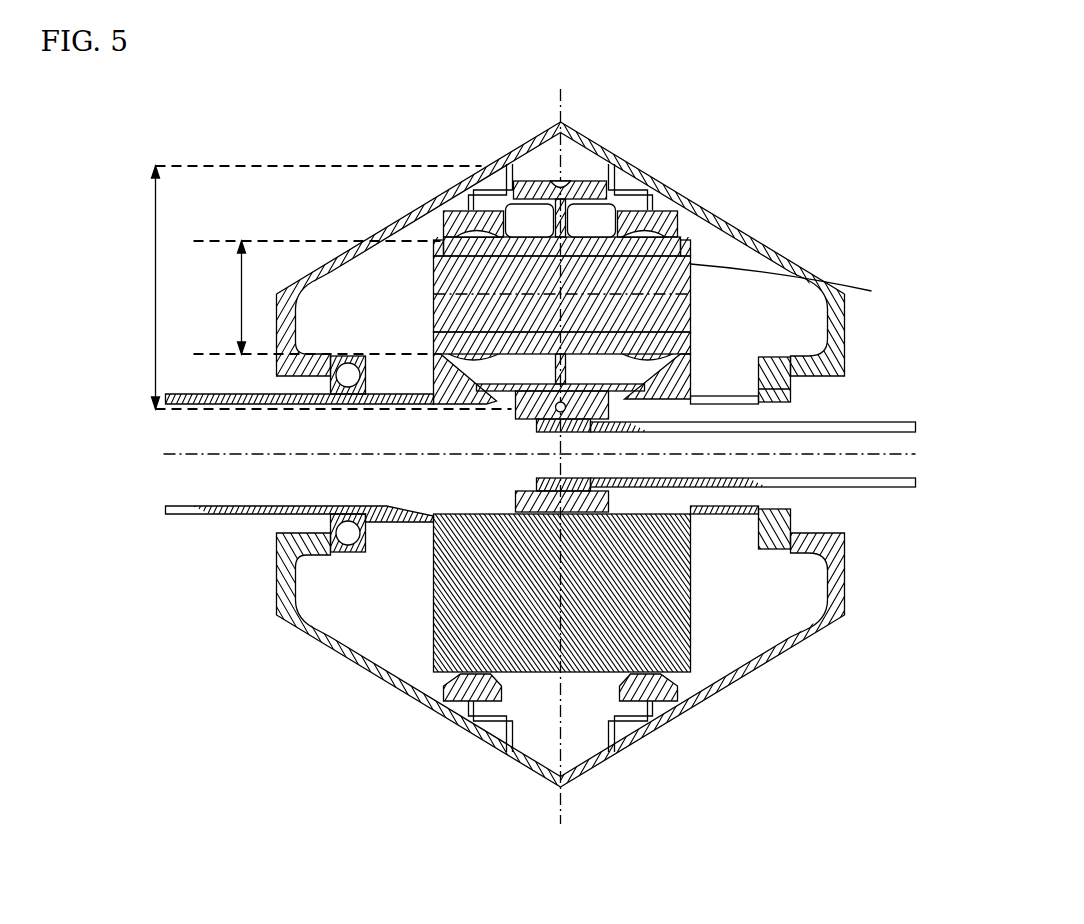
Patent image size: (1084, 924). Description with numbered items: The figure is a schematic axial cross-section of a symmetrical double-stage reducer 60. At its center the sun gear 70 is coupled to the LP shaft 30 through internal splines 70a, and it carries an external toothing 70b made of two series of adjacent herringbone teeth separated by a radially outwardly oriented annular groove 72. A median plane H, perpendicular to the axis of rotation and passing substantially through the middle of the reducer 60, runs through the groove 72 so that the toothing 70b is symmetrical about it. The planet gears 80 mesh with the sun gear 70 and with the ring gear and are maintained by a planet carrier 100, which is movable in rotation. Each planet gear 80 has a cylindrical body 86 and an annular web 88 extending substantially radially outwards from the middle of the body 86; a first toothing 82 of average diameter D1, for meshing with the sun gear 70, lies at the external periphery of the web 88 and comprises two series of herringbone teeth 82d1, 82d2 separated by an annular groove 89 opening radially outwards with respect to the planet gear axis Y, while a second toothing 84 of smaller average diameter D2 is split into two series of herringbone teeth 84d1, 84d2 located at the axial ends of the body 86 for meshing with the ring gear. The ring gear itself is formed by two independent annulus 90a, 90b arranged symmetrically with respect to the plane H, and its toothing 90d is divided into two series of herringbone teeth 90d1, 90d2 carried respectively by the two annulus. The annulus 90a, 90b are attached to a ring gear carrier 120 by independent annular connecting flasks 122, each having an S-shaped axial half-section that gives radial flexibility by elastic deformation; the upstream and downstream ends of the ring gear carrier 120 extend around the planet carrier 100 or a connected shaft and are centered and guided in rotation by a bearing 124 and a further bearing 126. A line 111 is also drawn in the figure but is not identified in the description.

The reducer 60 is at (852, 127).
The median plane H is at (560, 96).
The annulus 90a is at (466, 166).
The annulus 90b is at (675, 220).
The ring gear carrier 120 is at (765, 221).
The planet carrier 100 is at (699, 611).
The cylindrical body 86 is at (430, 270).
The planet gears 80 is at (683, 340).
The toothing 90d is at (576, 222).
The herringbone teeth 90d1 is at (437, 230).
The herringbone teeth 90d2 is at (688, 242).
The tangent line 111 is at (799, 286).
The herringbone teeth 82d1 is at (510, 172).
The herringbone teeth 82d2 is at (575, 172).
The annular groove 89 is at (590, 172).
The annular connecting flasks 122 is at (467, 190).
The second toothing 84 is at (559, 358).
The herringbone teeth 84d1 is at (447, 340).
The herringbone teeth 84d2 is at (645, 356).
The axis Y is at (645, 355).
The annular web 88 is at (553, 372).
The first toothing 82 is at (577, 385).
The annular groove 72 is at (552, 407).
The LP shaft 30 is at (888, 418).
The sun gear 70 is at (530, 420).
The internal splines 70a is at (580, 478).
The external toothing 70b is at (605, 505).
The bearing 124 is at (340, 392).
The further bearing 126 is at (788, 380).
The average diameter D1 is at (150, 285).
The average diameter D2 is at (238, 295).